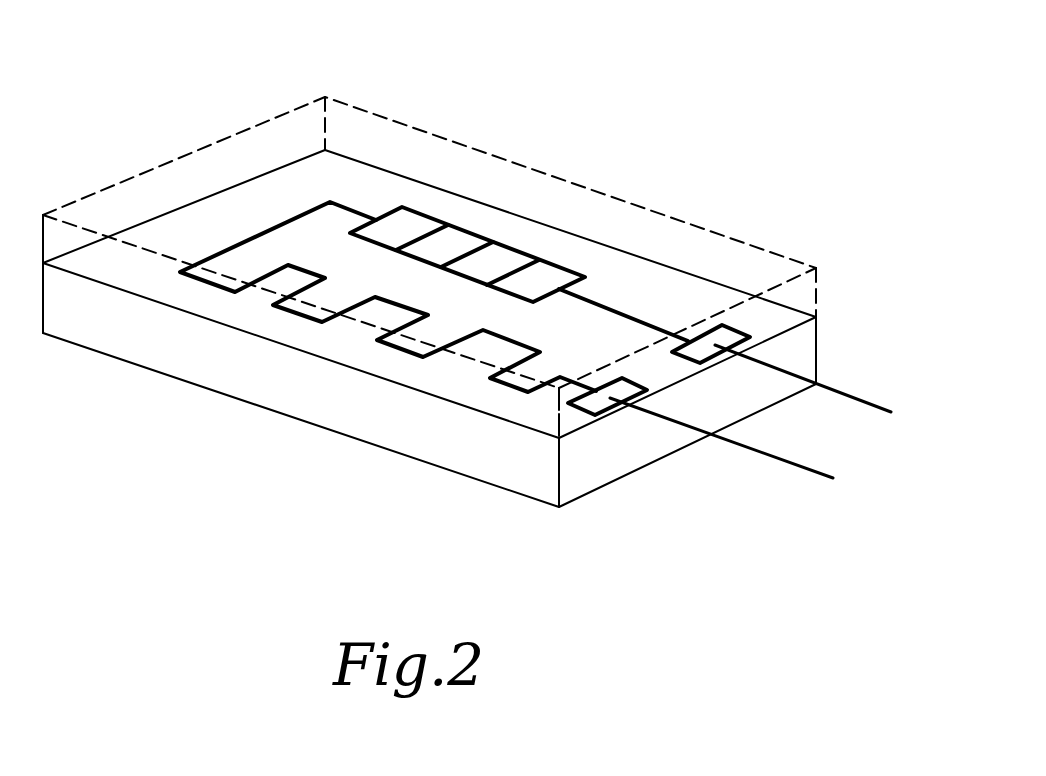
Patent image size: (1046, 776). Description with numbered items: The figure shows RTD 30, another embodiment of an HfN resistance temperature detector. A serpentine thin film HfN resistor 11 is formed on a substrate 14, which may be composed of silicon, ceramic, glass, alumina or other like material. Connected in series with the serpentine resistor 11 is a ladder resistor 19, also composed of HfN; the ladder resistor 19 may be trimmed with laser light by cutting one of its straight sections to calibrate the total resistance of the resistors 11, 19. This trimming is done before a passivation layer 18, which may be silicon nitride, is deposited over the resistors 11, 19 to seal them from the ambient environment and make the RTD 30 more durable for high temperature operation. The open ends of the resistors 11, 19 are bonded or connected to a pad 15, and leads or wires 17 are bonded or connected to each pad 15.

The RTD 30 is at (487, 269).
The substrate 14 is at (816, 332).
The passivation layer 18 is at (596, 186).
The thin film serpentine resistor 11 is at (507, 340).
The ladder resistor 19 is at (578, 273).
The pad 15 is at (708, 332).
The leads or wires 17 is at (873, 400).